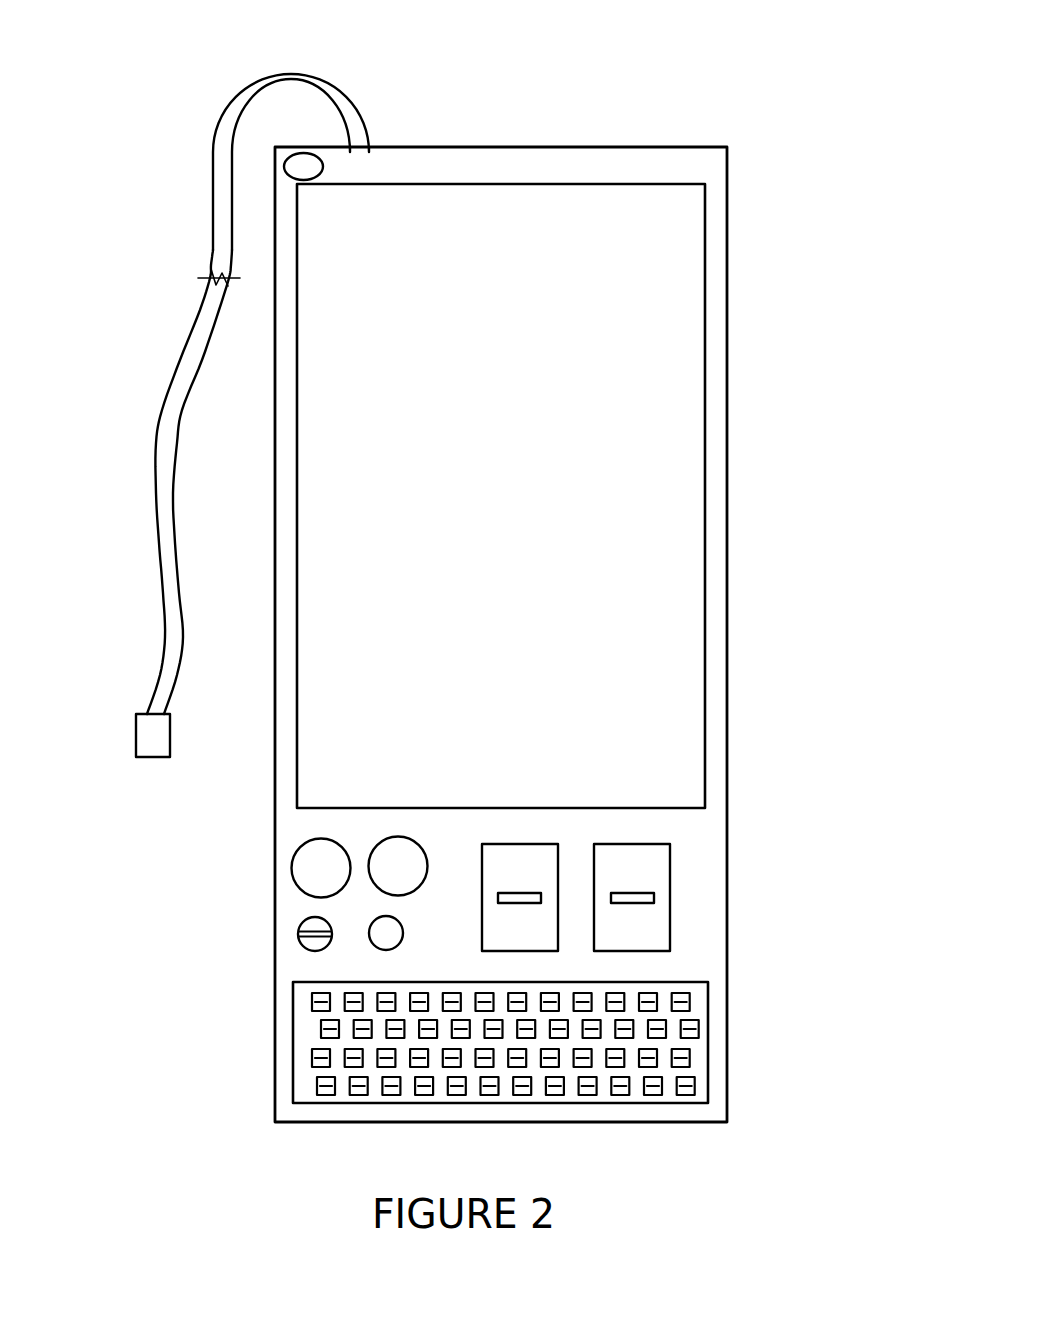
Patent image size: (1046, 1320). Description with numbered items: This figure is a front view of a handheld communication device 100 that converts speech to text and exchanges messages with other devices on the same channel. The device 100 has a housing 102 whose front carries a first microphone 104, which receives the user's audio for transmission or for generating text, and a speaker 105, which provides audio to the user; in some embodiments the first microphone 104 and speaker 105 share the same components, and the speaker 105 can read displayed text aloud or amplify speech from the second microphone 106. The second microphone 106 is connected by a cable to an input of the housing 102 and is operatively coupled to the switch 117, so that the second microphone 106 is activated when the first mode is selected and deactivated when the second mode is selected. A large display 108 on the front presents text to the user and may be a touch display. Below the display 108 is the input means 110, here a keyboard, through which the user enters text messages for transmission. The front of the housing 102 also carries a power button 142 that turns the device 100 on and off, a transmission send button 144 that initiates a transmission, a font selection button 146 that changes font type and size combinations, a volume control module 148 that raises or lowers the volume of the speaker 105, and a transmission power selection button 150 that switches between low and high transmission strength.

The handheld communication device 100 is at (579, 50).
The housing 102 is at (698, 147).
The first microphone 104 is at (360, 165).
The speaker 105 is at (323, 166).
The second microphone 106 is at (136, 737).
The display 108 is at (520, 507).
The input means 110 is at (708, 1037).
The switch 117 is at (670, 907).
The power button 142 is at (292, 866).
The transmission "send" button 144 is at (401, 837).
The font selection button 146 is at (403, 932).
The volume control module 148 is at (298, 934).
The transmission power selection button 150 is at (539, 843).